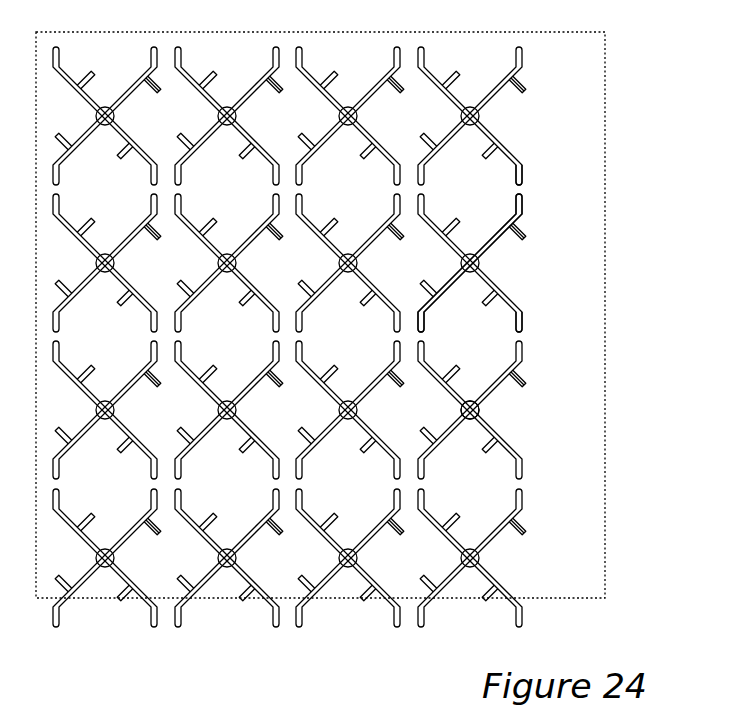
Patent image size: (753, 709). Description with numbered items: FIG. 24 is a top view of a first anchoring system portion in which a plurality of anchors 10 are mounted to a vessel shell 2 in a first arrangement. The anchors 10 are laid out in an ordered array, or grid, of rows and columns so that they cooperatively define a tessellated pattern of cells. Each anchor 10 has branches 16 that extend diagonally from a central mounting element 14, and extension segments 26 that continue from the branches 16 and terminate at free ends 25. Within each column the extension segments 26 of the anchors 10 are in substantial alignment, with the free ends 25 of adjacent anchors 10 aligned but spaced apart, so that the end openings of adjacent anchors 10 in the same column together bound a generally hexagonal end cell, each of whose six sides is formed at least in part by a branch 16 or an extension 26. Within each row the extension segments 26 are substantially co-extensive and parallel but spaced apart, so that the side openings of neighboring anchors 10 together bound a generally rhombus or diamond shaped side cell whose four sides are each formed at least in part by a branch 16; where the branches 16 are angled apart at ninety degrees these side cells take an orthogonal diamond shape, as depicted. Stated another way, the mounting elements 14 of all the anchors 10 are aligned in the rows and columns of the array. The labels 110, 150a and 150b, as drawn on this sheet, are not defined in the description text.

The vessel shell 2 is at (594, 212).
The anchor 10 is at (552, 189).
The mounting element 14 is at (488, 407).
The branch 16 is at (493, 251).
The free end 25 is at (522, 192).
The extension segment 26 is at (540, 298).
The array of elements 110 is at (370, 378).
The horizontal gap region 150a is at (430, 274).
The vertical gap region 150b is at (490, 348).